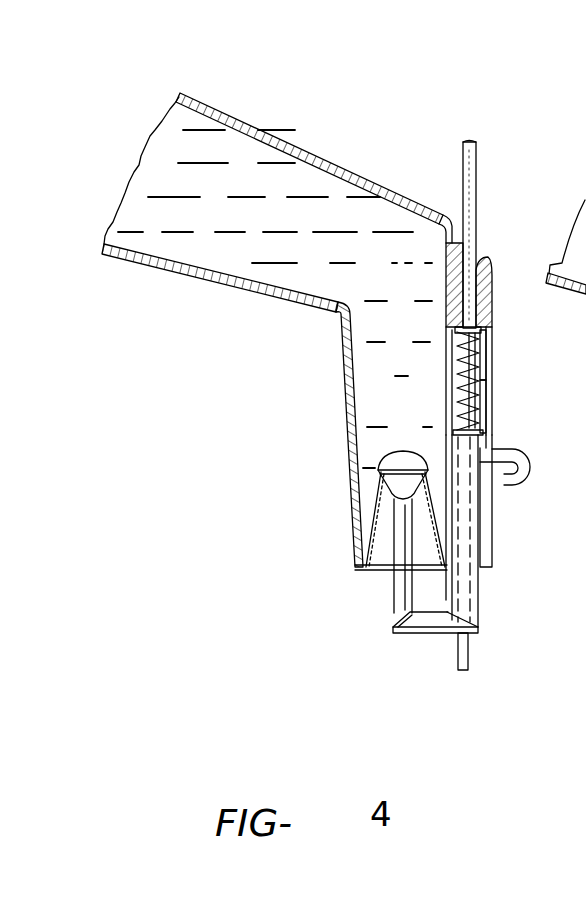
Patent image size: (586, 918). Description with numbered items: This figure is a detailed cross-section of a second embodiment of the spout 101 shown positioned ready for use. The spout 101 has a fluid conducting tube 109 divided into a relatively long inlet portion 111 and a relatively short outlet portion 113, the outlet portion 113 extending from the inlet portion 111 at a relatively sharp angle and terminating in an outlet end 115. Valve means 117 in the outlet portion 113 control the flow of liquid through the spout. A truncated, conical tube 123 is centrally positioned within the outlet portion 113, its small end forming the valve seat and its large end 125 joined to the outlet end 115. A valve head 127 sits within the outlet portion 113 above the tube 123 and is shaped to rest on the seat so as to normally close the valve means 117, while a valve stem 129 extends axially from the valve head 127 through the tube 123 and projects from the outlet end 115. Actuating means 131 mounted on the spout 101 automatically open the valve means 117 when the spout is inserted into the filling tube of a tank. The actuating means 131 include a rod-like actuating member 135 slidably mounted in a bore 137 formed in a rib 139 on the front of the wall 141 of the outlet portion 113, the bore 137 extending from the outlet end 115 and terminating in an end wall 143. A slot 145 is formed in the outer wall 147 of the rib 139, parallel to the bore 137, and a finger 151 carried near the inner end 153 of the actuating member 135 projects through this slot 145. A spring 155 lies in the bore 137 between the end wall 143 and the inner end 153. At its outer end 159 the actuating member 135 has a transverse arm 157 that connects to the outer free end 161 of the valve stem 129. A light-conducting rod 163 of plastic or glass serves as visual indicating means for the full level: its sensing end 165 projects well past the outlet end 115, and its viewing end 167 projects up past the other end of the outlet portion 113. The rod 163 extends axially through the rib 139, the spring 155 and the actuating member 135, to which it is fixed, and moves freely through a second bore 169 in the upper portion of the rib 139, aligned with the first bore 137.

The spout 101 is at (355, 127).
The fluid conducting tube 109 is at (283, 132).
The inlet portion 111 is at (229, 109).
The outlet portion 113 is at (343, 376).
The outlet end 115 is at (366, 571).
The valve means 117 is at (392, 506).
The truncated conical tube 123 is at (395, 479).
The large end 125 is at (368, 547).
The valve head 127 is at (392, 456).
The valve stem 129 is at (395, 613).
The actuating means 131 is at (500, 431).
The actuating member 135 is at (481, 591).
The bore 137 is at (484, 362).
The rib 139 is at (492, 266).
The wall 141 is at (446, 234).
The end wall 143 is at (481, 330).
The slot 145 is at (487, 404).
The outer wall 147 is at (493, 373).
The finger 151 is at (525, 483).
The inner end 153 is at (453, 424).
The spring 155 is at (462, 360).
The transverse arm 157 is at (425, 633).
The outer end 159 is at (479, 626).
The outer free end 161 is at (399, 628).
The light-conducting rod 163 is at (477, 190).
The sensing end 165 is at (468, 668).
The viewing end 167 is at (467, 140).
The second bore 169 is at (456, 274).